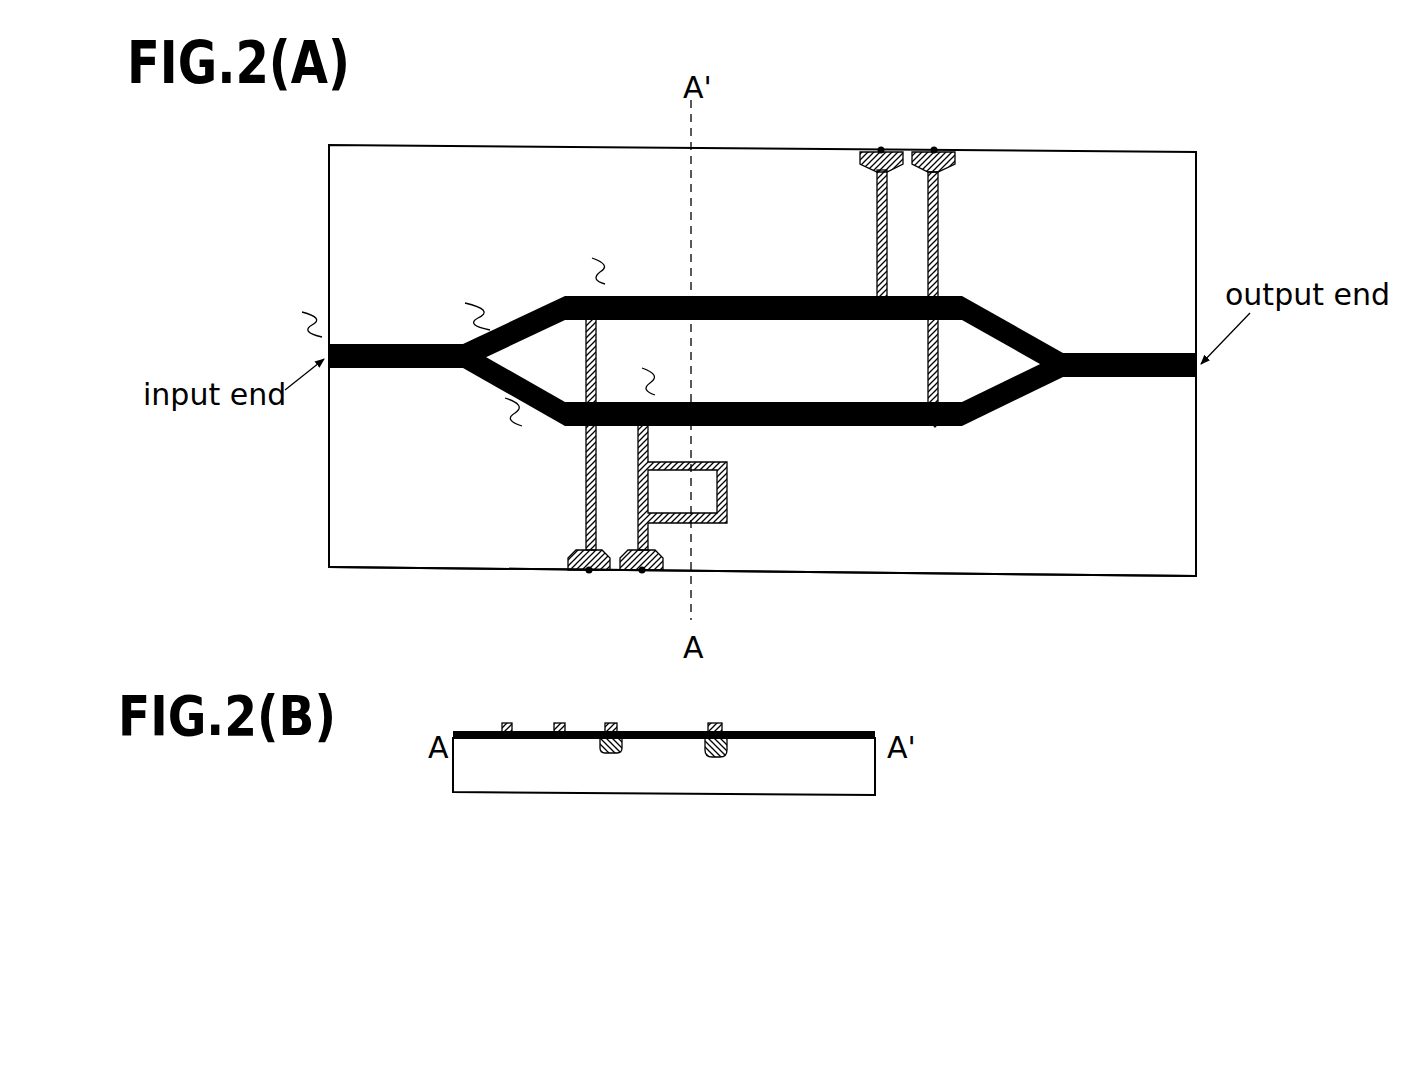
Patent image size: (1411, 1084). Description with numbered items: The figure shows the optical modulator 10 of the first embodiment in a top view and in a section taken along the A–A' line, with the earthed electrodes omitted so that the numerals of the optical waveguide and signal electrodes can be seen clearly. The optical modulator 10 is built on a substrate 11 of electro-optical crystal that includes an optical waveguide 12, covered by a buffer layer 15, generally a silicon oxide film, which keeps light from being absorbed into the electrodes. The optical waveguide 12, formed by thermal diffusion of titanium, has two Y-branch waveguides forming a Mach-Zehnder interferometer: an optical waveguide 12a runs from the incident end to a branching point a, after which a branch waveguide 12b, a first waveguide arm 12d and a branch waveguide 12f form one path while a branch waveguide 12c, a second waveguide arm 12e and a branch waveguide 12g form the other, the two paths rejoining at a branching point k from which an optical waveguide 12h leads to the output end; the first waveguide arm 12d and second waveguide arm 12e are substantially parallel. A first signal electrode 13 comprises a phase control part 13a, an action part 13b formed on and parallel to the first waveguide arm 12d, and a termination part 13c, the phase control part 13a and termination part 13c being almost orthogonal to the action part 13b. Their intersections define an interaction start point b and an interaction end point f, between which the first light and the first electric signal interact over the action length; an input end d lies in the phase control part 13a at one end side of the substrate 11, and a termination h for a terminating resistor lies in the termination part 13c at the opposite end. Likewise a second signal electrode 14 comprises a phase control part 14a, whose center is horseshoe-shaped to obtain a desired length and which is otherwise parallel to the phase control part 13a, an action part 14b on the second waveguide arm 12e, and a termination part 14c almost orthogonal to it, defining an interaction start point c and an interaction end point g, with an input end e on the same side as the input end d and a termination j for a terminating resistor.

In FIG. 2A, the optical modulator 10 is at (765, 357).
In FIG. 2A, the substrate 11 is at (435, 147).
In FIG. 2B, the substrate 11 is at (877, 775).
In FIG. 2A, the optical waveguide 12 is at (727, 369).
In FIG. 2A, the optical waveguide 12a is at (360, 368).
In FIG. 2A, the branch waveguide 12b is at (505, 300).
In FIG. 2A, the branch waveguide 12c is at (530, 410).
In FIG. 2A, the first waveguide arm 12d is at (712, 298).
In FIG. 2B, the first waveguide arm 12d is at (725, 760).
In FIG. 2A, the second waveguide arm 12e is at (800, 427).
In FIG. 2B, the second waveguide arm 12e is at (613, 756).
In FIG. 2A, the branch waveguide 12f is at (1013, 323).
In FIG. 2A, the branch waveguide 12g is at (1003, 412).
In FIG. 2A, the optical waveguide 12h is at (1115, 377).
In FIG. 2A, the first signal electrode 13 is at (711, 326).
In FIG. 2A, the phase control part 13a is at (585, 467).
In FIG. 2A, the action part 13b is at (800, 296).
In FIG. 2B, the action part 13b is at (718, 723).
In FIG. 2A, the termination part 13c is at (877, 270).
In FIG. 2A, the second signal electrode 14 is at (849, 335).
In FIG. 2A, the phase control part 14a is at (727, 466).
In FIG. 2B, the phase control part 14a is at (548, 723).
In FIG. 2A, the action part 14b is at (885, 427).
In FIG. 2B, the action part 14b is at (612, 723).
In FIG. 2A, the termination part 14c is at (940, 282).
In FIG. 2A, the buffer layer 15 is at (1095, 567).
In FIG. 2B, the buffer layer 15 is at (818, 733).
In FIG. 2A, the branching point a is at (456, 372).
In FIG. 2A, the interaction start point b is at (587, 297).
In FIG. 2A, the interaction start point c is at (640, 403).
In FIG. 2A, the input end d is at (587, 578).
In FIG. 2A, the input end e is at (640, 578).
In FIG. 2A, the interaction end point f is at (877, 320).
In FIG. 2A, the interaction end point g is at (936, 427).
In FIG. 2A, the termination h is at (882, 146).
In FIG. 2A, the termination j is at (935, 146).
In FIG. 2A, the branching point k is at (1064, 348).